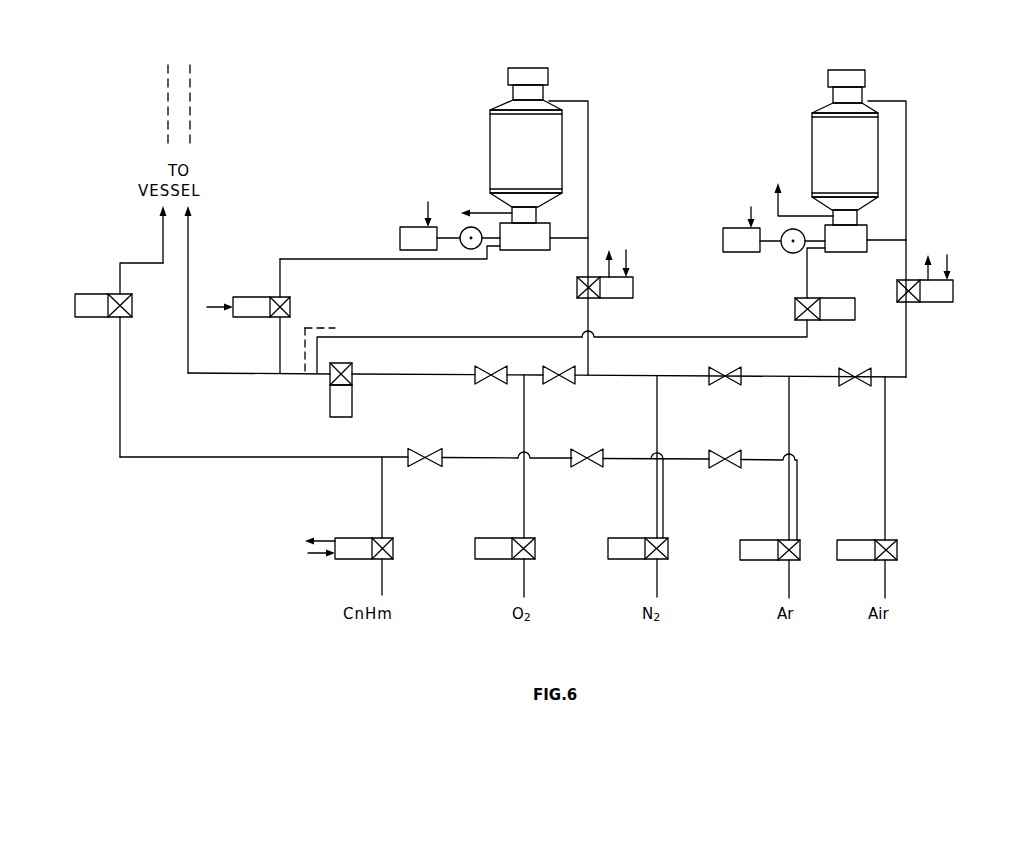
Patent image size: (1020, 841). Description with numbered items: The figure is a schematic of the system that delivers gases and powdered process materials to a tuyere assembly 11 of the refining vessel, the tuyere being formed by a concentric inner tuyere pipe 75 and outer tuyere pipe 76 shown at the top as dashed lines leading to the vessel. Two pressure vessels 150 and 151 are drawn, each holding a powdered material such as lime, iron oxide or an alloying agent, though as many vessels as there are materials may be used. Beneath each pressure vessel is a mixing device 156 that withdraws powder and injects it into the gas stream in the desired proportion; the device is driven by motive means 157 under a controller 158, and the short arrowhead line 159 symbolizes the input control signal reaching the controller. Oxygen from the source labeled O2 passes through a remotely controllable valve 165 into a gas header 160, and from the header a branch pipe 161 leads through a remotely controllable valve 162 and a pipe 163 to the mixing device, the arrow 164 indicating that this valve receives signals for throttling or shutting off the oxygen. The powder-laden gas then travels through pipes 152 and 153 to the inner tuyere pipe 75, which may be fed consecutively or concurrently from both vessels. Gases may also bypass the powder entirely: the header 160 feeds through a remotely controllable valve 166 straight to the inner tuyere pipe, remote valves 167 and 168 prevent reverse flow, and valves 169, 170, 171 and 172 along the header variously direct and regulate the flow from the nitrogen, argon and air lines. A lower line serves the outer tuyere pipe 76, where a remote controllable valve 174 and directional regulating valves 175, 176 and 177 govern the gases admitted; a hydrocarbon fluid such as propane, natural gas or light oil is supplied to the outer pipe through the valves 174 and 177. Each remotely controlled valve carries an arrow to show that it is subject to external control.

The tuyere assembly 11 is at (184, 58).
The inner tuyere pipe 75 is at (190, 107).
The outer tuyere pipe 76 is at (168, 108).
The pressure vessel 150 is at (542, 151).
The pressure vessel 151 is at (857, 151).
The pipe 152 is at (723, 337).
The pipe 153 is at (453, 262).
The mixing device 156 is at (541, 252).
The motive means 157 is at (458, 227).
The controller 158 is at (397, 237).
The arrowhead line 159 is at (424, 208).
The gas header 160 is at (906, 385).
The branch pipe 161 is at (906, 352).
The remotely controllable valve 162 is at (937, 303).
The pipe 163 is at (912, 153).
The arrow 164 is at (952, 262).
The remotely controllable valve 165 is at (490, 559).
The remotely controllable valve 166 is at (827, 322).
The remote valve 167 is at (255, 318).
The remote valve 168 is at (330, 404).
The valve 169 is at (488, 386).
The valve 170 is at (557, 386).
The valve 171 is at (727, 387).
The valve 172 is at (857, 388).
The remote controllable valve 174 is at (93, 320).
The directional regulating valve 175 is at (425, 470).
The directional regulating valve 176 is at (590, 471).
The directional regulating valve 177 is at (726, 471).